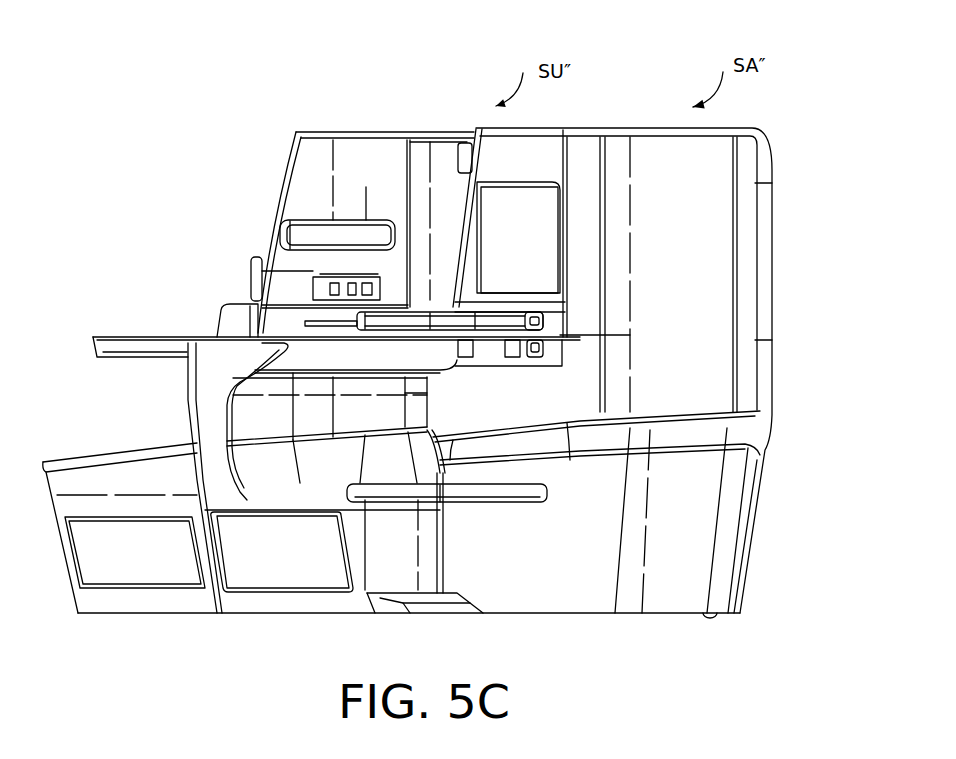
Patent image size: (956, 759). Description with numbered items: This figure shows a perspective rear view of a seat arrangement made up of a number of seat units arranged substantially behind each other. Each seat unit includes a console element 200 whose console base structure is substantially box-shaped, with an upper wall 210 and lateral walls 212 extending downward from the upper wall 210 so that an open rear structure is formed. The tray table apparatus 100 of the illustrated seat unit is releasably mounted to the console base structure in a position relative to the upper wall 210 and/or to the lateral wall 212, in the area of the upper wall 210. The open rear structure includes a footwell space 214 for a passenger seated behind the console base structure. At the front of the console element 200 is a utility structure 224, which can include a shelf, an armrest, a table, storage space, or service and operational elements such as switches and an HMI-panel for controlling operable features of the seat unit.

The tray table apparatus 100 is at (343, 314).
The console element 200 is at (186, 296).
The upper wall 210 is at (487, 303).
The lateral walls 212 is at (555, 318).
The footwell space 214 is at (497, 461).
The front utility structure 224 is at (186, 318).